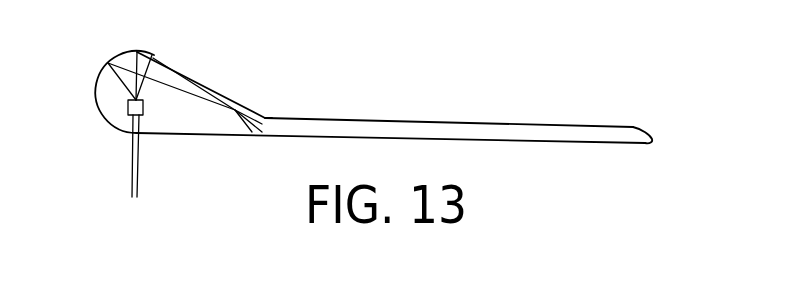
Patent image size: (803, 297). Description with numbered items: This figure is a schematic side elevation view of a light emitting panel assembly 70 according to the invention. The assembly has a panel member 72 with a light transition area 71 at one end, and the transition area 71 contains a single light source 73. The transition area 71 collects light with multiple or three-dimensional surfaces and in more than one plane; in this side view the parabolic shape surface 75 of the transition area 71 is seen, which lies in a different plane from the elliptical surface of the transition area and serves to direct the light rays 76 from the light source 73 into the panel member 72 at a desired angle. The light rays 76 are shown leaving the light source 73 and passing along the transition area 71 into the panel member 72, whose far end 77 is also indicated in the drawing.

The light emitting panel assembly 70 is at (422, 104).
The light transition area 71 is at (182, 125).
The panel member 72 is at (540, 123).
The light source 73 is at (127, 107).
The parabolic shape surface 75 is at (120, 52).
The light rays 76 is at (177, 72).
The blade tip 77 is at (640, 130).